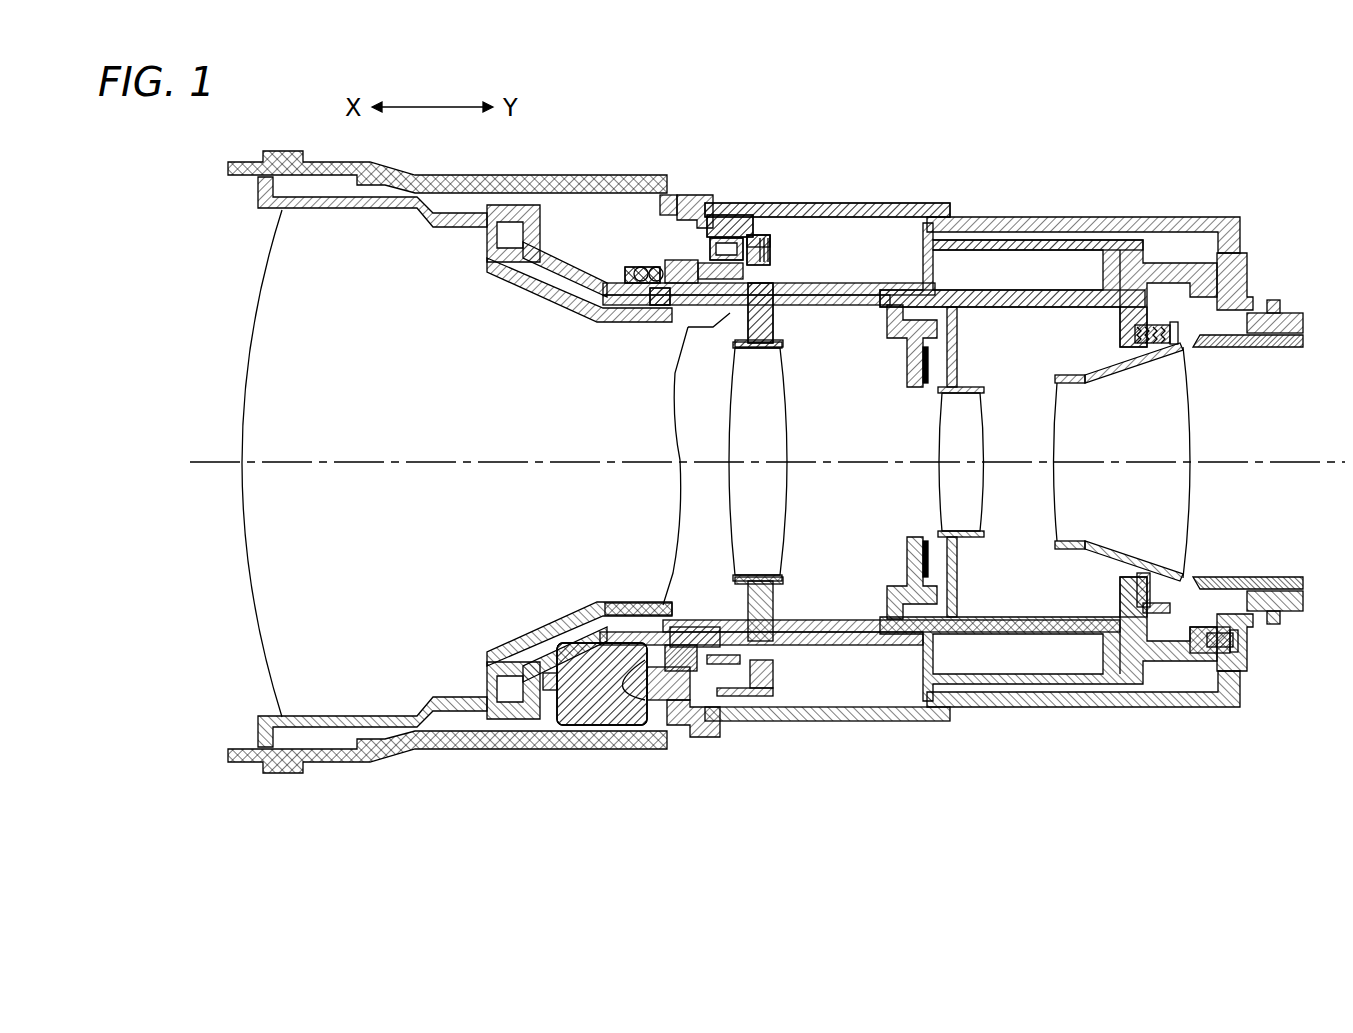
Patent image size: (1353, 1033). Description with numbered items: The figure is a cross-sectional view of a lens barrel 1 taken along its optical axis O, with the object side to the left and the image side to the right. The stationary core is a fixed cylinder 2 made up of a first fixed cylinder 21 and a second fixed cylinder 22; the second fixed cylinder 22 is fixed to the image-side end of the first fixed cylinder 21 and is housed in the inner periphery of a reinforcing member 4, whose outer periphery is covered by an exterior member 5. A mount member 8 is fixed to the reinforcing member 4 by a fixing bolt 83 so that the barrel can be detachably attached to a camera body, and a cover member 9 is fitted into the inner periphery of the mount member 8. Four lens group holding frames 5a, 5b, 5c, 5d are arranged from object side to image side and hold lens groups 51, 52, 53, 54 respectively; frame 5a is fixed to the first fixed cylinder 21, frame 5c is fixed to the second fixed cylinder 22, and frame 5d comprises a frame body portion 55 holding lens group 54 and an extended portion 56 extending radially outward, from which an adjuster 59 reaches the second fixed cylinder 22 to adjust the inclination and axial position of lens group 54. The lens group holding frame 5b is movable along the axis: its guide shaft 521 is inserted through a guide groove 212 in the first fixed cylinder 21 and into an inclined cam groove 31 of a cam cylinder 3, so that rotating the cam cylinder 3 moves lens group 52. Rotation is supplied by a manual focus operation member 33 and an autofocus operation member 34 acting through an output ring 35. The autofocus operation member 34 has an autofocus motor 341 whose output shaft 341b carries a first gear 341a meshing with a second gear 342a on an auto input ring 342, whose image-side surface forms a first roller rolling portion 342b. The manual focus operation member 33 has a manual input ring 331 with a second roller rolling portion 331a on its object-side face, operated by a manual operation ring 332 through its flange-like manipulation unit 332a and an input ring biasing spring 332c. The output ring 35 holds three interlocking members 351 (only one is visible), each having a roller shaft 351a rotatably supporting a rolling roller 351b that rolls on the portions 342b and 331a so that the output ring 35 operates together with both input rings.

The lens barrel 1 is at (1205, 145).
The fixed cylinder 2 is at (960, 115).
The first fixed cylinder 21 is at (885, 290).
The second fixed cylinder 22 is at (1003, 295).
The cam cylinder 3 is at (848, 278).
The cam groove 31 is at (805, 230).
The manual focus operation member 33 is at (733, 115).
The manual input ring 331 is at (745, 225).
The second roller rolling portion 331a is at (710, 222).
The manual operation ring 332 is at (642, 178).
The manipulation unit 332a is at (768, 235).
The input ring biasing spring 332c is at (758, 232).
The autofocus operation member 34 is at (715, 815).
The autofocus motor 341 is at (605, 740).
The first gear 341a is at (625, 640).
The output shaft 341b is at (615, 725).
The auto input ring 342 is at (700, 738).
The second gear 342a is at (626, 600).
The first roller rolling portion 342b is at (720, 247).
The output ring 35 is at (682, 328).
The interlocking member 351 is at (500, 345).
The roller shaft 351a is at (672, 300).
The rolling roller 351b is at (660, 290).
The reinforcing member 4 is at (1048, 238).
The exterior member 5 is at (1117, 217).
The lens group holding frame 5a is at (257, 736).
The lens group holding frame 5b is at (775, 598).
The lens group holding frame 5c is at (958, 583).
The lens group holding frame 5d is at (1268, 500).
The lens group 51 is at (257, 600).
The lens group 52 is at (782, 508).
The guide shaft 521 is at (722, 343).
The lens group 53 is at (985, 488).
The lens group 54 is at (1178, 408).
The frame body portion 55 is at (1188, 580).
The extended portion 56 is at (1192, 590).
The adjuster 59 is at (1185, 333).
The mount member 8 is at (1285, 318).
The fixing bolt 83 is at (1252, 642).
The cover member 9 is at (1290, 345).
The guide groove 212 is at (818, 305).
The optical axis O is at (213, 462).